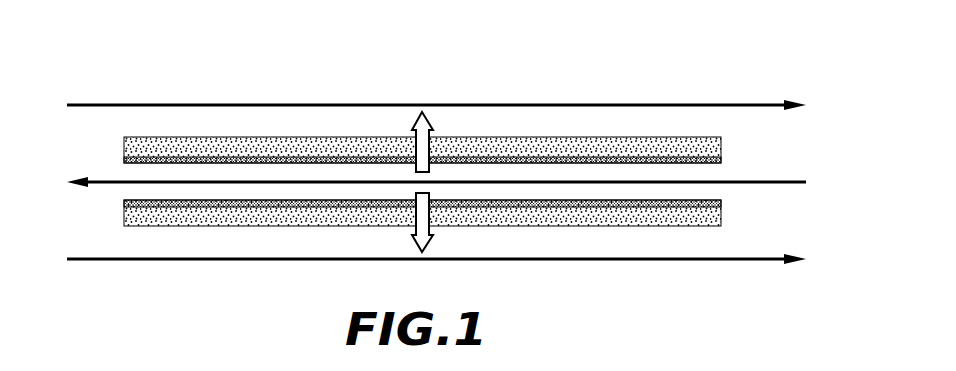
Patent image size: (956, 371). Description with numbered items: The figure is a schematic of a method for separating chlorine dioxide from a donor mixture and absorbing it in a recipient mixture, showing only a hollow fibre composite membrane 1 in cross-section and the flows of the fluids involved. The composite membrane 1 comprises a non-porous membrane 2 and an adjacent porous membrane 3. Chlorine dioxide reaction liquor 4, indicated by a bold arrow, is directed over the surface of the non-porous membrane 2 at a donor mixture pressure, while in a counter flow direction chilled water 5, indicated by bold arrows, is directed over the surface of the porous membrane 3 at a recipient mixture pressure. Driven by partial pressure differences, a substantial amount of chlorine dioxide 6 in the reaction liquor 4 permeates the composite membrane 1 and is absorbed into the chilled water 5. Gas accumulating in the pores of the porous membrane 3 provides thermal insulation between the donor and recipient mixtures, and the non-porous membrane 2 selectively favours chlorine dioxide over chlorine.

The composite membrane 1 is at (711, 63).
The non-porous membrane 2 is at (595, 160).
The porous membrane 3 is at (518, 146).
The chlorine dioxide reaction liquor 4 is at (755, 182).
The chilled water 5 is at (172, 105).
The chlorine dioxide 6 is at (431, 122).